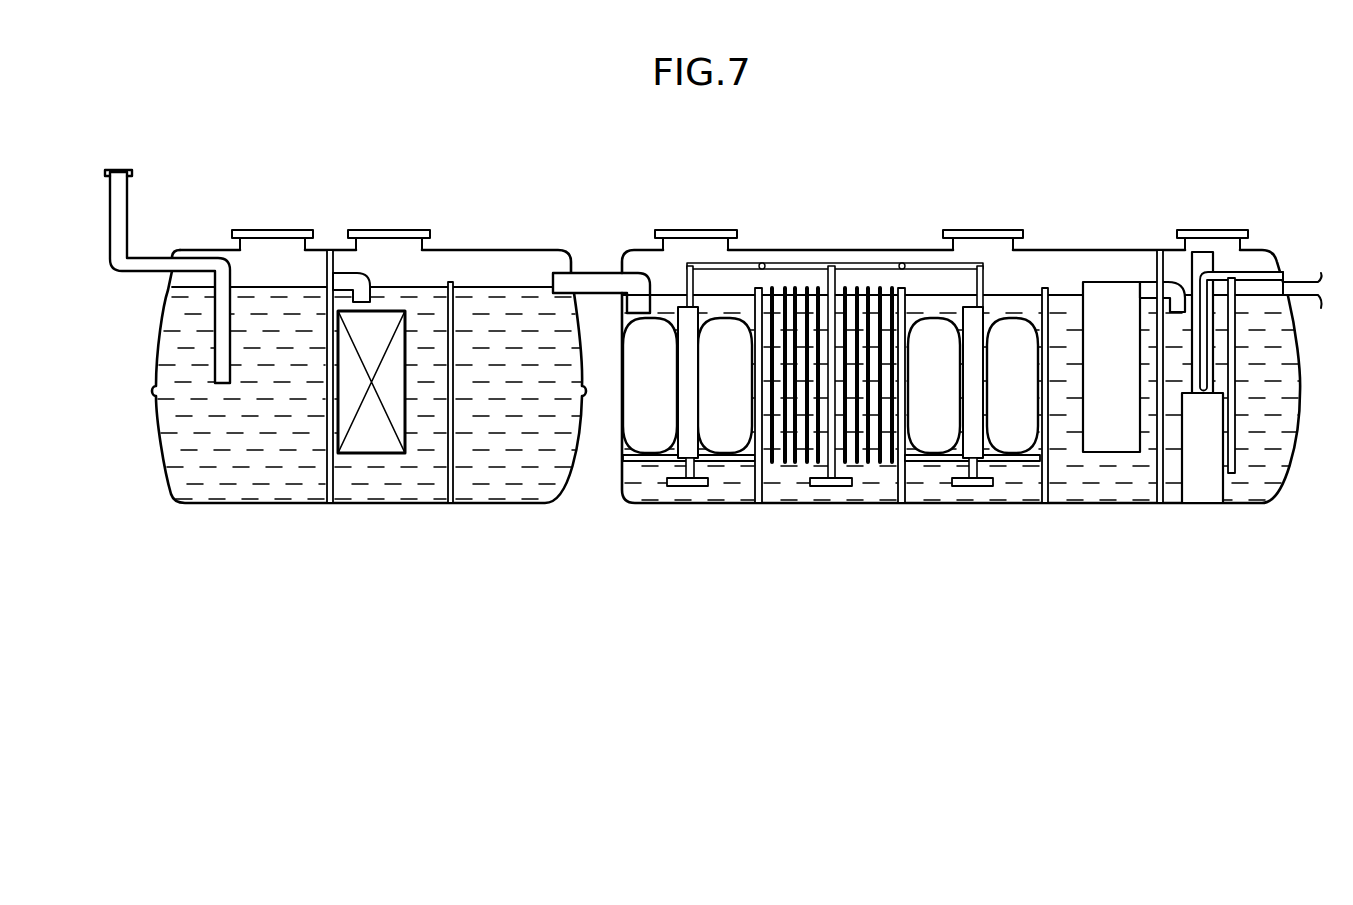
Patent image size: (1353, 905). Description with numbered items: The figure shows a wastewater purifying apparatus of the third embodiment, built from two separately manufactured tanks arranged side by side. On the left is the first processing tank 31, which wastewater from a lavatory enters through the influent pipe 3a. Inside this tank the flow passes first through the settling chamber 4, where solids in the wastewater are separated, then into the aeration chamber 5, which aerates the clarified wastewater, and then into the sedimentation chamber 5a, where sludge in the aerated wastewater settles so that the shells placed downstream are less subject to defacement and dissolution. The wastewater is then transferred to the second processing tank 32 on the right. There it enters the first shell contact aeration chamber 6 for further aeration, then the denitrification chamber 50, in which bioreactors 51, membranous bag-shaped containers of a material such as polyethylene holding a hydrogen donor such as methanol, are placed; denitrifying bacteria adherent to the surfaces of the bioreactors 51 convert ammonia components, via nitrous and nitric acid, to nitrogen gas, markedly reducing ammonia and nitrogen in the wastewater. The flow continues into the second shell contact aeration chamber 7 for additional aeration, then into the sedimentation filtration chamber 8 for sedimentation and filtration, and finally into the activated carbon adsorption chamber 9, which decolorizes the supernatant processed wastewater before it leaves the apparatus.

The influent pipe 3a is at (130, 202).
The first processing tank 31 is at (480, 230).
The second processing tank 32 is at (1090, 230).
The settling chamber 4 is at (176, 473).
The aeration chamber 5 is at (383, 495).
The sedimentation chamber 5a is at (512, 495).
The first shell contact aeration chamber 6 is at (655, 497).
The denitrification chamber 50 is at (830, 355).
The bioreactor 51 is at (878, 288).
The second shell contact aeration chamber 7 is at (1008, 497).
The sedimentation filtration chamber 8 is at (1098, 497).
The activated carbon adsorption chamber 9 is at (1275, 482).